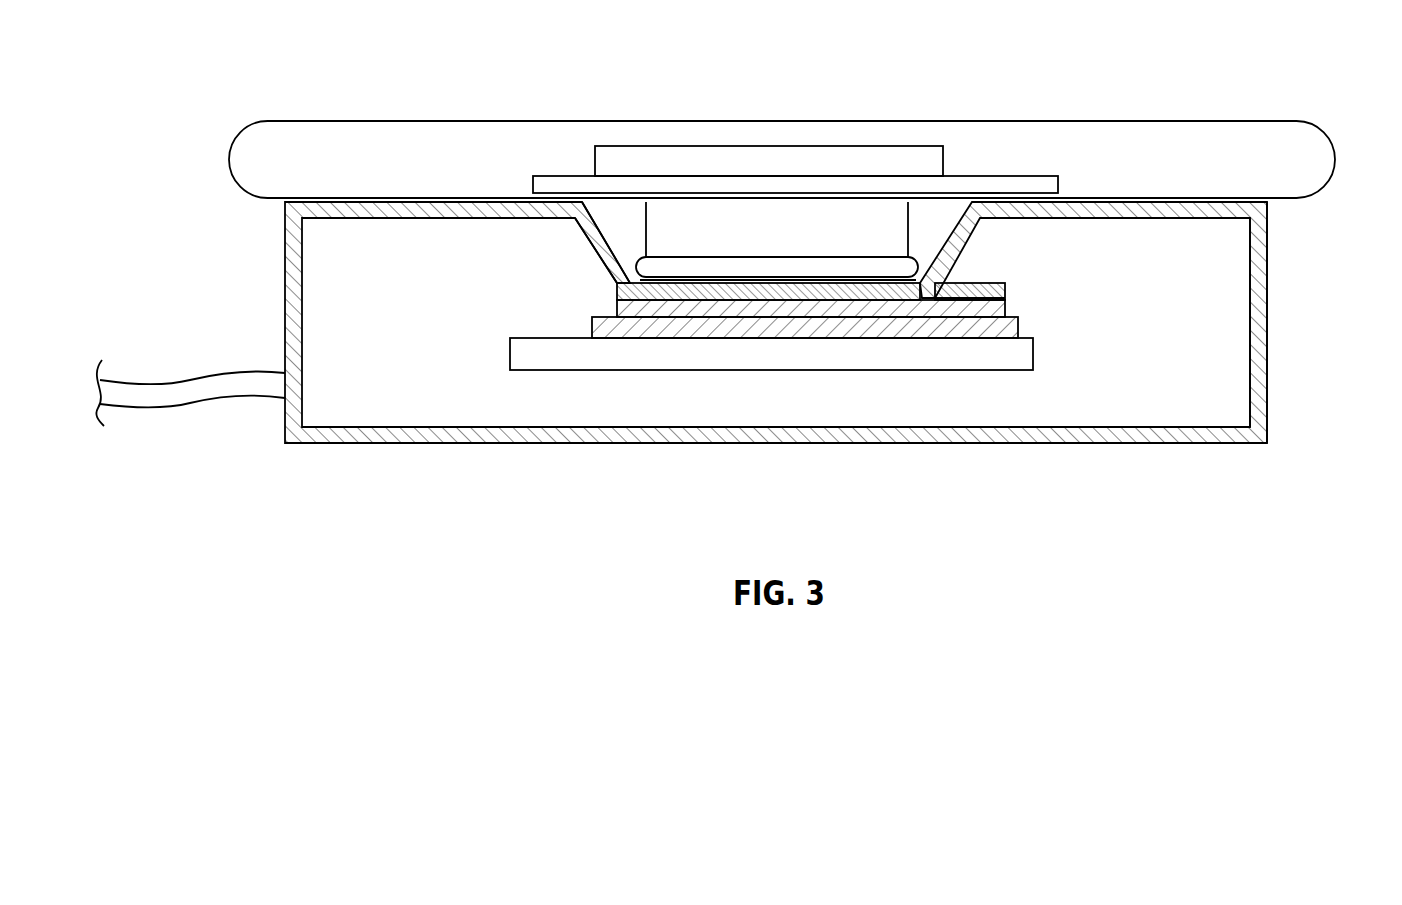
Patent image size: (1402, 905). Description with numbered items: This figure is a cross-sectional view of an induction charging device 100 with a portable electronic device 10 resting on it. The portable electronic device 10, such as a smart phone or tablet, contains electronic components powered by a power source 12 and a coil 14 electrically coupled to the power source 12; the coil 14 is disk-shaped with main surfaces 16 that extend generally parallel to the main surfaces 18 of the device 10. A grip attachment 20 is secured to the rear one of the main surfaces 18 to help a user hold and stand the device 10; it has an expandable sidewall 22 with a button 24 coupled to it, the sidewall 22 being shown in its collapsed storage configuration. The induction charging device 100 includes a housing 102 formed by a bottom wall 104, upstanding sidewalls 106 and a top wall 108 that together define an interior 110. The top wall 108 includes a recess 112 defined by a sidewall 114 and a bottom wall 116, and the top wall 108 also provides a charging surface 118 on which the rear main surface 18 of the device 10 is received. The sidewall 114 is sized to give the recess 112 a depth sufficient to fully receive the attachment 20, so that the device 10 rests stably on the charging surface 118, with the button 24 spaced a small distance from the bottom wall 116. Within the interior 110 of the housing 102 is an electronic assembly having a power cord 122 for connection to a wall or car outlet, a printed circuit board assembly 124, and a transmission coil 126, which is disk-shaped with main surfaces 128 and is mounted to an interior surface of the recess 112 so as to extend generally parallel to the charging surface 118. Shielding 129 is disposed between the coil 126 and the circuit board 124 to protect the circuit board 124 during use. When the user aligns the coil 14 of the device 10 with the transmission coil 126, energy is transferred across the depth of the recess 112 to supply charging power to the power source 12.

The portable electronic device 10 is at (801, 134).
The power source 12 is at (893, 160).
The coil 14 is at (542, 193).
The main surfaces 16 is at (586, 196).
The main surfaces 18 is at (468, 122).
The grip attachment 20 is at (715, 231).
The expandable sidewall 22 is at (843, 225).
The button 24 is at (668, 276).
The induction charging device 100 is at (825, 292).
The housing 102 is at (345, 433).
The bottom wall 104 is at (1160, 443).
The upstanding sidewalls 106 is at (1268, 282).
The top wall 108 is at (1227, 210).
The interior 110 is at (1084, 378).
The recess 112 is at (595, 262).
The sidewall 114 is at (618, 284).
The bottom wall 116 is at (837, 293).
The charging surface 118 is at (1160, 200).
The power cord 122 is at (147, 397).
The printed circuit board assembly 124 is at (733, 355).
The transmission coil 126 is at (615, 340).
The main surfaces 128 is at (958, 300).
The shielding 129 is at (805, 340).